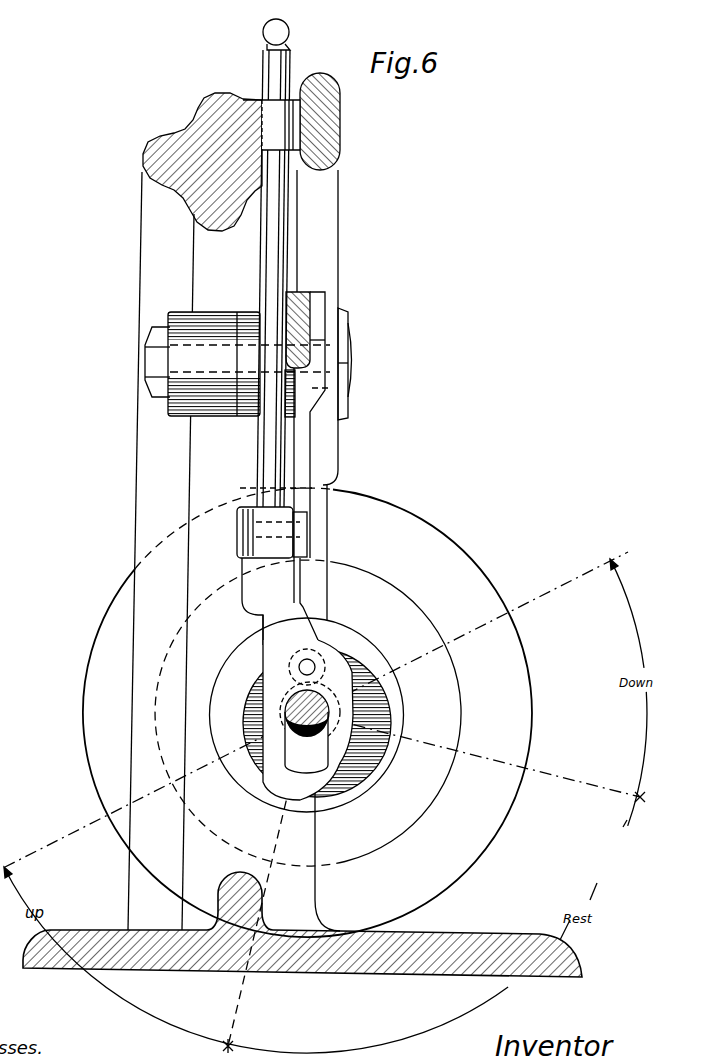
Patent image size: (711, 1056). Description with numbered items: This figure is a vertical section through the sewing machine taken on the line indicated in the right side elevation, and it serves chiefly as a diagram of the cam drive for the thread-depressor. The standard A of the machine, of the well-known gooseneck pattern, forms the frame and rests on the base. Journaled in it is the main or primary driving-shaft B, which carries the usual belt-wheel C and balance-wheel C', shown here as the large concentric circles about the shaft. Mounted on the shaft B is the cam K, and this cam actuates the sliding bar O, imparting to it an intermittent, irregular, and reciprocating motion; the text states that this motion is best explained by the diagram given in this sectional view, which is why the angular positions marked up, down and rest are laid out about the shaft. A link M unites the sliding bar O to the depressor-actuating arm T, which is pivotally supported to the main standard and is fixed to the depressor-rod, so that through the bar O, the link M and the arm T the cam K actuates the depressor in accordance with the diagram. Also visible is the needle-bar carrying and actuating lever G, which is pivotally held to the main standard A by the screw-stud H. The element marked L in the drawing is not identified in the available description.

The standard A is at (142, 489).
The main or primary driving-shaft B is at (288, 702).
The belt-wheel C is at (308, 713).
The balance-wheel C' is at (307, 712).
The needle-bar carrying and actuating lever G is at (330, 228).
The screw-stud H is at (350, 357).
The cam K is at (403, 706).
The lever rod L is at (280, 197).
The link M is at (302, 432).
The sliding bar O is at (298, 618).
The actuating-arm T is at (293, 286).